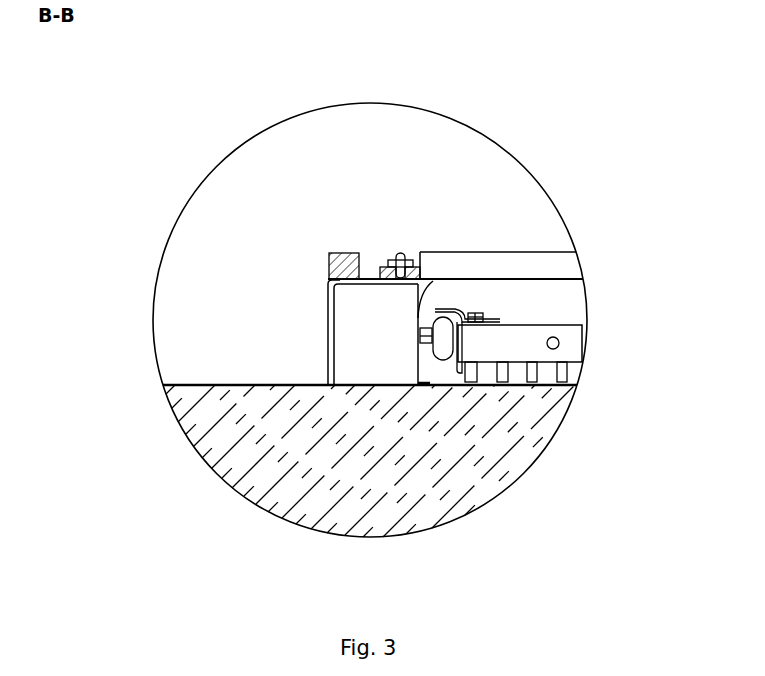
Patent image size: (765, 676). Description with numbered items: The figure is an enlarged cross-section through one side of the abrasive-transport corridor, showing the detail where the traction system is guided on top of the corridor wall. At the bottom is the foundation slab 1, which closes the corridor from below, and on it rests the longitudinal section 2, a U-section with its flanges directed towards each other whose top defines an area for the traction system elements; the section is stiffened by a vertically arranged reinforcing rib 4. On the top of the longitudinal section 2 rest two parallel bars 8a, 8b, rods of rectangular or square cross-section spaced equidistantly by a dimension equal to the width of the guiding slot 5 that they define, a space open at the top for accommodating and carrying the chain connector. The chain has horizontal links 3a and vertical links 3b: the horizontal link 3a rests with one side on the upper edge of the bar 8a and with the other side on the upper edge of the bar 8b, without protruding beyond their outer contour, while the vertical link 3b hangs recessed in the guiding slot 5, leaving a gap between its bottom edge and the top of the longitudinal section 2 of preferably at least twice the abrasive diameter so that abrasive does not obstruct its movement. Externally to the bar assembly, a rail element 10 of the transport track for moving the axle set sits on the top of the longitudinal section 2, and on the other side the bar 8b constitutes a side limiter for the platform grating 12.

The foundation slab 1 is at (393, 482).
The longitudinal section 2 is at (328, 335).
The horizontal link 3a is at (400, 251).
The vertical link 3b is at (395, 260).
The reinforcing rib 4 is at (365, 355).
The guiding slot 5 is at (400, 281).
The bar 8a is at (381, 266).
The bar 8b is at (420, 257).
The rail element 10 is at (330, 256).
The platform grating 12 is at (492, 265).